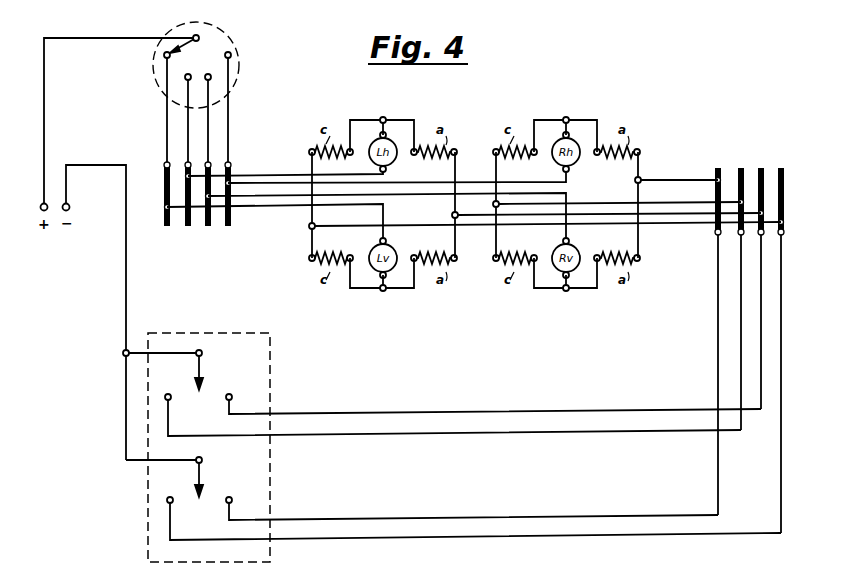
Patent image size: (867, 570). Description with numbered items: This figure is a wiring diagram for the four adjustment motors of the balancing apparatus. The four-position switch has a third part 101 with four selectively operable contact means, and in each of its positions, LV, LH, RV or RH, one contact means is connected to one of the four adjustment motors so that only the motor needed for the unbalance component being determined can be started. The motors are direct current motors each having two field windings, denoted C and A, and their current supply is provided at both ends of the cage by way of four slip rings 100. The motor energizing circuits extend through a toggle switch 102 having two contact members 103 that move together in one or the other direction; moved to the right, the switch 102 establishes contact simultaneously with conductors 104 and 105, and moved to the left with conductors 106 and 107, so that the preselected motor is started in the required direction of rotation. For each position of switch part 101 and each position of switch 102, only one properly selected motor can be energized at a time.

The slip rings 100 is at (233, 171).
The third part of the four-position switch 101 is at (226, 41).
The toggle switch 102 is at (270, 357).
The contact members 103 is at (199, 368).
The circuit lead 104 is at (429, 412).
The circuit lead 105 is at (436, 518).
The circuit lead 106 is at (430, 436).
The circuit lead 107 is at (435, 540).